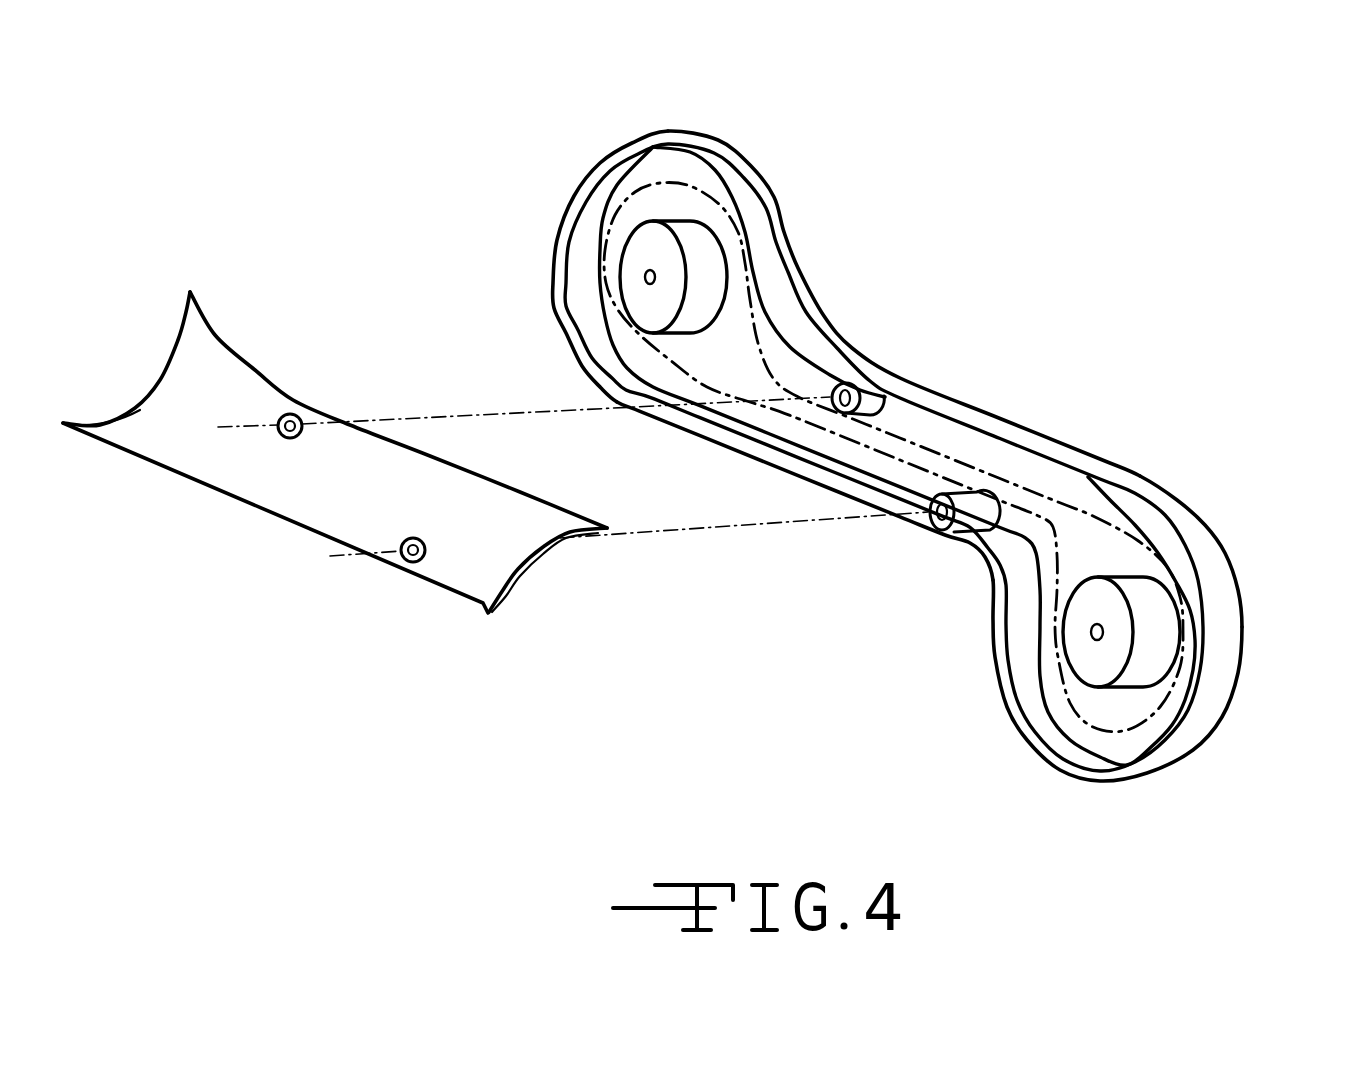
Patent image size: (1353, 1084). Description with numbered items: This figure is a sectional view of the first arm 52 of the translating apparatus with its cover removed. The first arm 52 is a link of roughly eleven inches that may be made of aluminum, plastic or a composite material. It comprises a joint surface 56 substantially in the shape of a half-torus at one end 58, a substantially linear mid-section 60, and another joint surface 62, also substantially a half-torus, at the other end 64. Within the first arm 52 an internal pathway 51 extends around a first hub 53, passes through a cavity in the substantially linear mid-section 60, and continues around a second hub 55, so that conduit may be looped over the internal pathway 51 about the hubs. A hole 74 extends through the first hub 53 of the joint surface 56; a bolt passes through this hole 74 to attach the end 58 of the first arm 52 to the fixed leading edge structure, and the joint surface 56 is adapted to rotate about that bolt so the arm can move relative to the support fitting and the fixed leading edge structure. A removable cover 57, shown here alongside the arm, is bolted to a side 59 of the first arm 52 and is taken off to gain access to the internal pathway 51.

The internal pathway 51 is at (1107, 518).
The first arm 52 is at (967, 407).
The first hub 53 is at (628, 257).
The second hub 55 is at (1135, 645).
The joint surface 56 is at (779, 194).
The removable cover 57 is at (357, 430).
The end 58 is at (610, 146).
The side 59 is at (793, 474).
The substantially linear mid-section 60 is at (1047, 435).
The joint surface 62 is at (1243, 608).
The end 64 is at (1225, 550).
The hole 74 is at (642, 278).